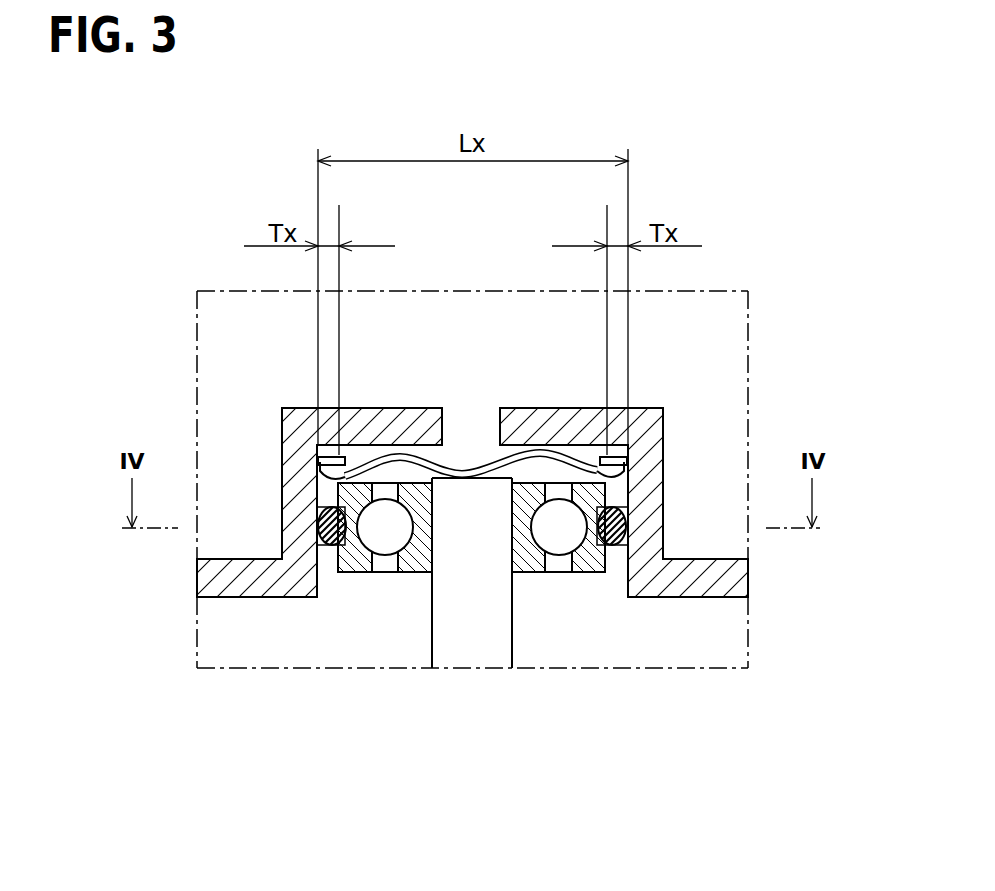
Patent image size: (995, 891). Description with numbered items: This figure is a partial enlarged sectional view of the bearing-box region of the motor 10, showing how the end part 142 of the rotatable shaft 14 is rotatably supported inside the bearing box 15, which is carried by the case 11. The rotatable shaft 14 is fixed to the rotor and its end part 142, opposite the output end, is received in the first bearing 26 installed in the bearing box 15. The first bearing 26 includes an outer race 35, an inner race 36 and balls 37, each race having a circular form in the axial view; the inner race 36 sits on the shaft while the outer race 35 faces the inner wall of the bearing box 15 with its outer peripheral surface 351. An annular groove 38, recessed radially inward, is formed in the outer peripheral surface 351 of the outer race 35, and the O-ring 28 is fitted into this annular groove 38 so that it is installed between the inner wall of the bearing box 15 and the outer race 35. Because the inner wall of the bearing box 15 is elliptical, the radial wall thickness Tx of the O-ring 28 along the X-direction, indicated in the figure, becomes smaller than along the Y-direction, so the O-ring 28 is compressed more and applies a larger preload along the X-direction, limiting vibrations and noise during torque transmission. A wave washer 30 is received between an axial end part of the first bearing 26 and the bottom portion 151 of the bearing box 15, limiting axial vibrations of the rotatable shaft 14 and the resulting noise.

The motor 10 is at (170, 326).
The case 11 is at (218, 582).
The rotatable shaft 14 is at (318, 584).
The end part 142 is at (465, 503).
The bearing box 15 is at (655, 459).
The bottom portion 151 is at (527, 418).
The first bearing 26 is at (601, 634).
The O-ring 28 is at (333, 548).
The wave washer 30 is at (450, 457).
The outer race 35 is at (592, 575).
The outer peripheral surface 351 is at (607, 568).
The inner race 36 is at (532, 575).
The balls 37 is at (558, 535).
The annular groove 38 is at (622, 541).